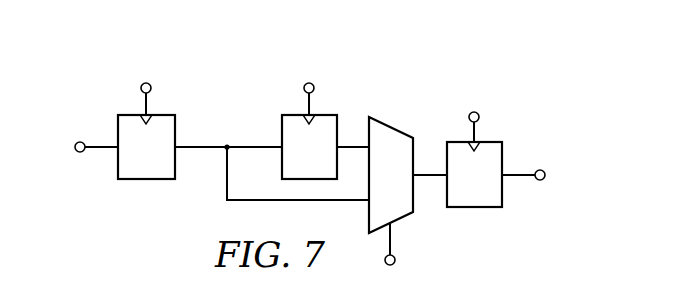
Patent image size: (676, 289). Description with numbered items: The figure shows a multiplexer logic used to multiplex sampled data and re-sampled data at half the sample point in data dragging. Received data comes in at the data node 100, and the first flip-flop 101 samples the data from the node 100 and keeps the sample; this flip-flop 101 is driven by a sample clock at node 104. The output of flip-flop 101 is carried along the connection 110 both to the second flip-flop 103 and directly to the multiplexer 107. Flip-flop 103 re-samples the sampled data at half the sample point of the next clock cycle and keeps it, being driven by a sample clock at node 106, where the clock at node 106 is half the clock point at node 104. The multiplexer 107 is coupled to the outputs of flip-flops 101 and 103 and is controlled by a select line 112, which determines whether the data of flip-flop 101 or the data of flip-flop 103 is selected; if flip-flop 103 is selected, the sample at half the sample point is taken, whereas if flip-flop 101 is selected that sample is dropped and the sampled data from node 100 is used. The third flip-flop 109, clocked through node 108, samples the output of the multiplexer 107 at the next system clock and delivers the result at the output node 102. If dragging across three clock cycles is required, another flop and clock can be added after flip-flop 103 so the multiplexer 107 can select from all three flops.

The data node 100 is at (78, 142).
The flip-flop 101 is at (133, 179).
The data output terminal 102 is at (541, 170).
The flip-flop 103 is at (282, 132).
The sample clock node 104 is at (146, 83).
The sample clock node 106 is at (309, 83).
The multiplexer 107 is at (390, 127).
The third clock input 108 is at (474, 112).
The flip-flop 109 is at (485, 207).
The node / bypass line 110 is at (225, 149).
The select line 112 is at (395, 262).